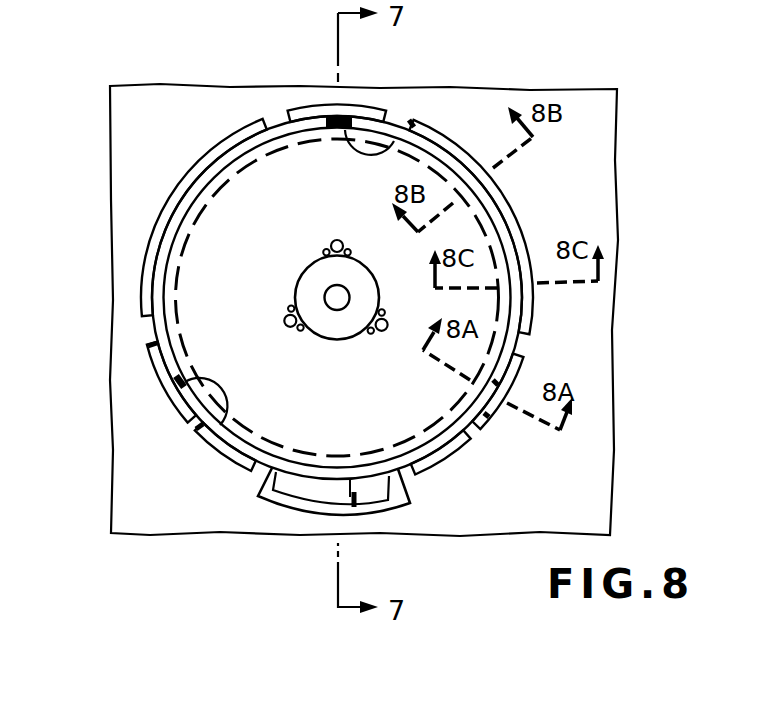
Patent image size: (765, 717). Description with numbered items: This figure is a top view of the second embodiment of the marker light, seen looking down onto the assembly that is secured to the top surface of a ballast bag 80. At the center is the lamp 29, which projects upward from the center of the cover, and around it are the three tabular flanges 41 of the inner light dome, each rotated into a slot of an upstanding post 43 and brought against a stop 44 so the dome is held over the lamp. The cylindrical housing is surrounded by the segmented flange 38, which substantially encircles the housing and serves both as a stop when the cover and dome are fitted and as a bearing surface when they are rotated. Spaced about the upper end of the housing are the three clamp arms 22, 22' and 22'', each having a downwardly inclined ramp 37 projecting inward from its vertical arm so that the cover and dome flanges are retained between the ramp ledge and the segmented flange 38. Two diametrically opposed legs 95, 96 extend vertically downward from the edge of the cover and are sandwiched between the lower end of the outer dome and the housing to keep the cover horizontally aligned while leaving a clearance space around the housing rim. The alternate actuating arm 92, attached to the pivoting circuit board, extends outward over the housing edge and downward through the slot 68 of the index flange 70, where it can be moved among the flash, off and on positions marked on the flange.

The clamp arm 22 is at (540, 445).
The clamp arm 22' is at (309, 73).
The clamp arm 22'' is at (115, 397).
The lamp 29 is at (332, 292).
The ramp 37 is at (412, 121).
The segmented flange 38 is at (242, 126).
The tabular flange 41 is at (287, 316).
The post 43 is at (338, 242).
The stop 44 is at (332, 242).
The slot 68 is at (265, 481).
The index flange 70 is at (303, 508).
The ballast bag 80 is at (602, 125).
The alternate actuating arm 92 is at (357, 497).
The leg 95 is at (150, 270).
The leg 96 is at (527, 338).